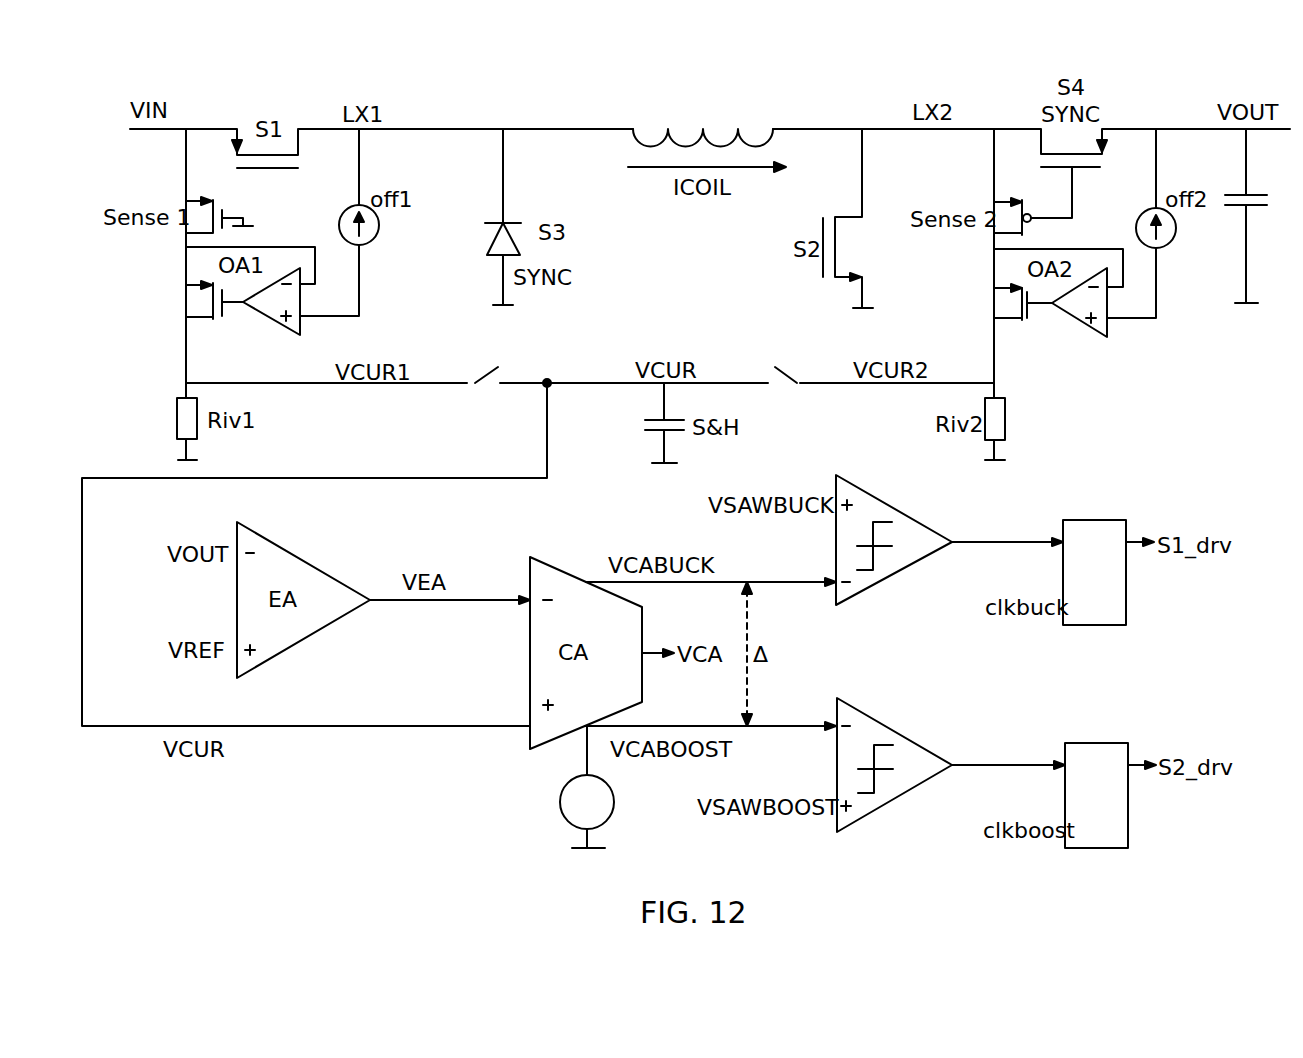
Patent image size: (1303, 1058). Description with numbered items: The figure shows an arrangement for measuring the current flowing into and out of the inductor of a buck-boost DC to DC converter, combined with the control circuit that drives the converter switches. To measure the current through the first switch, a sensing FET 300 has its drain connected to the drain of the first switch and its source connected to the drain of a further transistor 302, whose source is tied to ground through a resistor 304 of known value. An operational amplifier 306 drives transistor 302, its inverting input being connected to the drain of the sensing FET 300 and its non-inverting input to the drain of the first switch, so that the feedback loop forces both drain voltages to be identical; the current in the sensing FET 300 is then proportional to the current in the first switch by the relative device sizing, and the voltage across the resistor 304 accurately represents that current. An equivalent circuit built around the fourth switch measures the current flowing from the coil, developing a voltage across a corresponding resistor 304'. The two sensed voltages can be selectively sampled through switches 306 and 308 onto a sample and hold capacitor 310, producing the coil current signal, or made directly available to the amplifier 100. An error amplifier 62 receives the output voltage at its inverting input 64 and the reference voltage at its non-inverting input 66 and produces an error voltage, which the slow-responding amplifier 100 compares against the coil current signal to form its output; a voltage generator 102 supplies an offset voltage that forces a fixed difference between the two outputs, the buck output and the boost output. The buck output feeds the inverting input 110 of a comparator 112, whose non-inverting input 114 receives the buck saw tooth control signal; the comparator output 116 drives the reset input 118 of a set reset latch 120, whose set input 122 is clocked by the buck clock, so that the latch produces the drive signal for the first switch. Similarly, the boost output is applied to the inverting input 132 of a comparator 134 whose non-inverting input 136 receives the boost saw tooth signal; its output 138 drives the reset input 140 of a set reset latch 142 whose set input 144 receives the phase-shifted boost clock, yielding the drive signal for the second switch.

The sensing FET 300 is at (178, 200).
The further transistor 302 is at (186, 300).
The operational amplifier 306 is at (265, 316).
The resistor 304 is at (152, 424).
The corresponding resistor associated with switch S4 304' is at (1032, 429).
The sample and hold capacitor 310 is at (645, 425).
The switch 308 is at (783, 388).
The error amplifier 62 is at (305, 643).
The inverting input 64 is at (232, 540).
The non-inverting input 66 is at (226, 660).
The amplifier 100 is at (530, 660).
The voltage generator 102 is at (560, 802).
The comparator 112 is at (897, 505).
The non-inverting input 114 is at (830, 520).
The inverting input 110 is at (830, 598).
The output 116 is at (952, 535).
The reset input 118 is at (1058, 530).
The set reset latch 120 is at (1128, 603).
The set input 122 is at (1060, 622).
The comparator 134 is at (897, 728).
The inverting input 132 is at (830, 738).
The non-inverting input 136 is at (830, 823).
The output 138 is at (952, 760).
The reset input 140 is at (1058, 752).
The set reset latch 142 is at (1130, 833).
The set input 144 is at (1060, 850).